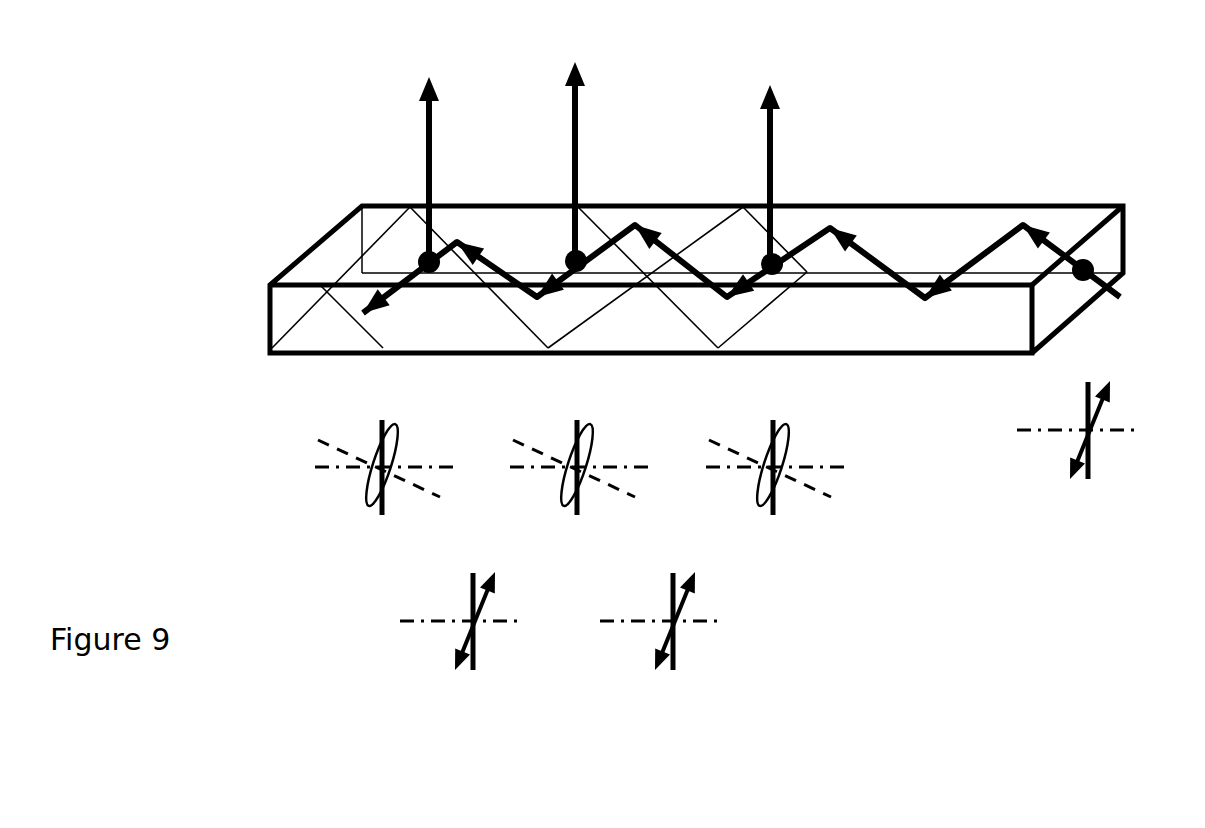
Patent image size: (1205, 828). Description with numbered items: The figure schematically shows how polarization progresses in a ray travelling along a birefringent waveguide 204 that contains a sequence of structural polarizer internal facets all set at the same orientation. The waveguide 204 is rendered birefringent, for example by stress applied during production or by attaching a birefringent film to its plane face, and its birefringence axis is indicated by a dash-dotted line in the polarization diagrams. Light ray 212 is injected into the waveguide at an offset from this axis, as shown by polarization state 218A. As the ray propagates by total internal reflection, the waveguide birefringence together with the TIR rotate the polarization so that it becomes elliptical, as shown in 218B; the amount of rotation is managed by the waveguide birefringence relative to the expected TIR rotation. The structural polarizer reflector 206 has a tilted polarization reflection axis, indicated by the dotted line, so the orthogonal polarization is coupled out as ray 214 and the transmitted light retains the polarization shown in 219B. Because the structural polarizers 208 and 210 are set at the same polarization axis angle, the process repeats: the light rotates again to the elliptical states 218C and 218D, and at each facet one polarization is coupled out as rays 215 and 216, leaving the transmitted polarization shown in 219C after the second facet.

The waveguide 204 is at (982, 205).
The structural polarizer reflector 206 is at (787, 243).
The structural polarizer 208 is at (590, 243).
The structural polarizer 210 is at (383, 225).
The injected light ray 212 is at (775, 281).
The coupled-out ray 214 is at (776, 161).
The coupled-out ray 215 is at (581, 150).
The coupled-out ray 216 is at (432, 155).
The polarization state at injection 218A is at (1096, 438).
The elliptical polarization state 218B is at (777, 494).
The elliptical polarization state 218C is at (581, 498).
The elliptical polarization state 218D is at (386, 506).
The transmitted polarization state 219B is at (680, 626).
The transmitted polarization state 219C is at (480, 626).